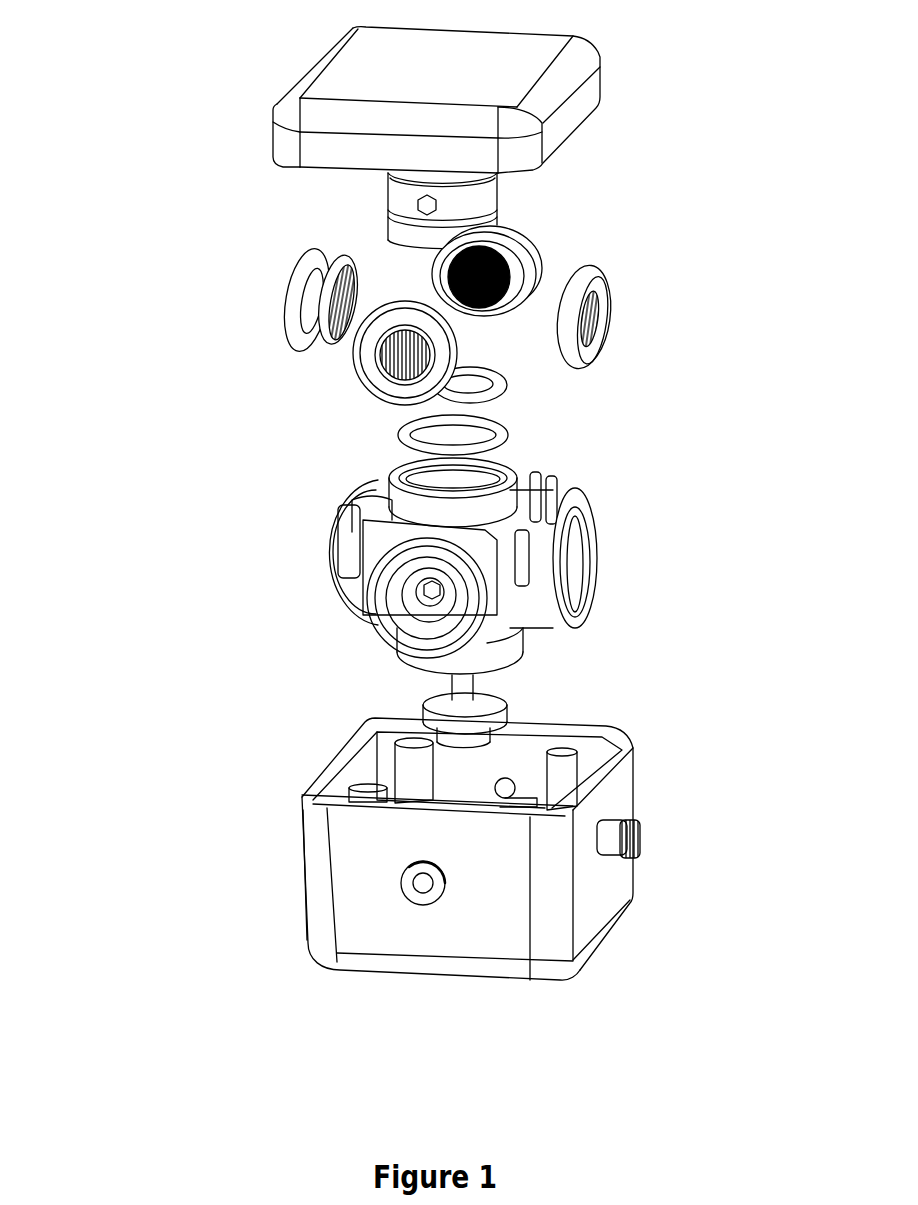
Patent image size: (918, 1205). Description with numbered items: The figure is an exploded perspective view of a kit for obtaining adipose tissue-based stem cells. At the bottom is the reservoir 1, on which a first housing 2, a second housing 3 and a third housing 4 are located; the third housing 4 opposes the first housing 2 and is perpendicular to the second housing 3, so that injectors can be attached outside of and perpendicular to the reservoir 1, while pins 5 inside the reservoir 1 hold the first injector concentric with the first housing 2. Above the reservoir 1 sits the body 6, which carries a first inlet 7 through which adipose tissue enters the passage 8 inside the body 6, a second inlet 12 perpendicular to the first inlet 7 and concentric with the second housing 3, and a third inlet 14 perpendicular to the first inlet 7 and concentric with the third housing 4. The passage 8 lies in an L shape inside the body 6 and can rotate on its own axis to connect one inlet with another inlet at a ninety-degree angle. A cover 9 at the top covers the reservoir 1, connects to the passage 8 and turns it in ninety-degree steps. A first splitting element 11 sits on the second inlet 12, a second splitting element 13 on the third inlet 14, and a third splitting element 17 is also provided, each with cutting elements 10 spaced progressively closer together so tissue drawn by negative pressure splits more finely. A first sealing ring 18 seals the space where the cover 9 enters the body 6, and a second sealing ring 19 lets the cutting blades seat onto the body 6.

The reservoir 1 is at (445, 858).
The first housing 2 is at (623, 837).
The second housing 3 is at (417, 885).
The third housing 4 is at (302, 817).
The pin 5 is at (553, 750).
The body 6 is at (497, 615).
The first inlet 7 is at (570, 567).
The passage 8 is at (425, 205).
The cover 9 is at (350, 76).
The cutting element 10 is at (396, 362).
The first splitting element 11 is at (400, 407).
The second inlet 12 is at (430, 590).
The second splitting element 13 is at (340, 335).
The third inlet 14 is at (323, 555).
The third splitting element 17 is at (497, 268).
The first sealing ring 18 is at (400, 433).
The second sealing ring 19 is at (295, 277).